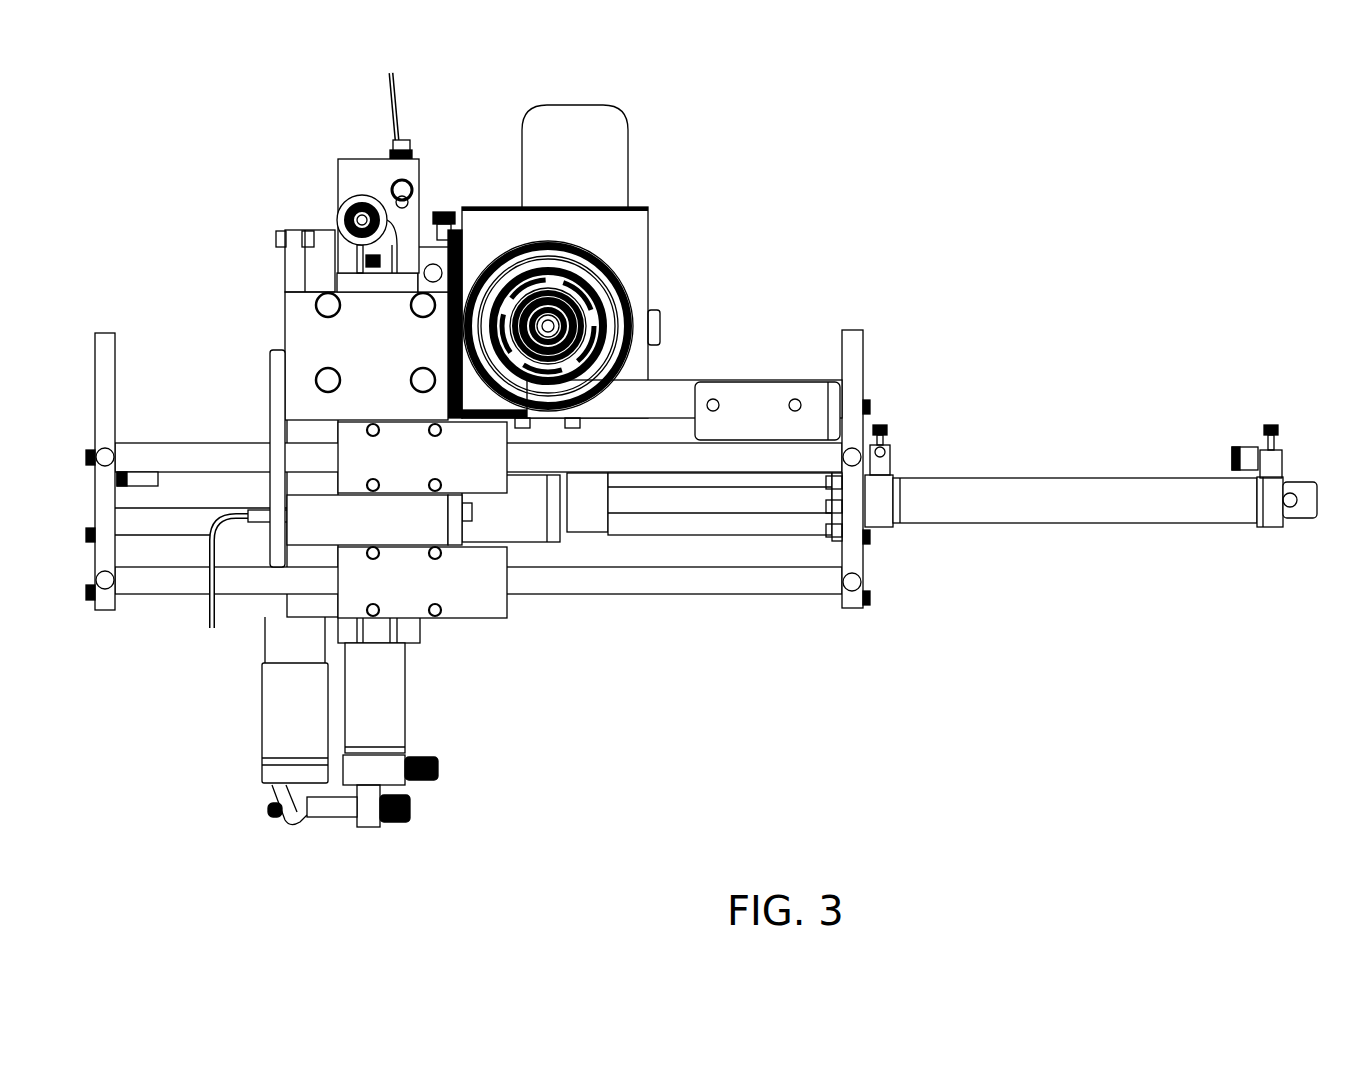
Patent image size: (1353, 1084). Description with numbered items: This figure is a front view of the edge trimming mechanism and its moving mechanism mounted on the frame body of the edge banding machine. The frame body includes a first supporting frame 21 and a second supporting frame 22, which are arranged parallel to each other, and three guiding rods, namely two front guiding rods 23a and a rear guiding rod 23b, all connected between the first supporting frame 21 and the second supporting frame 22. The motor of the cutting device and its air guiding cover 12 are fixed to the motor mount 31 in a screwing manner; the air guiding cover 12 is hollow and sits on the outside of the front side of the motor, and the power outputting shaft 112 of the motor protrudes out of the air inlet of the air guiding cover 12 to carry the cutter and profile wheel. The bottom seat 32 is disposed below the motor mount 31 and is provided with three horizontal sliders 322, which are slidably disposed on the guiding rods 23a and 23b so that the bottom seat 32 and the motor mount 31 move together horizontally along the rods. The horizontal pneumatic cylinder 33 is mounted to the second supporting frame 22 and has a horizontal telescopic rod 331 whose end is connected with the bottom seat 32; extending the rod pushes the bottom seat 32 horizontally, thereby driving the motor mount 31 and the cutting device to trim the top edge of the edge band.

The air guiding cover 12 is at (630, 222).
The power outputting shaft 112 is at (600, 322).
The first supporting frame 21 is at (105, 345).
The second supporting frame 22 is at (858, 345).
The front guiding rods 23a is at (197, 457).
The rear guiding rod 23b is at (135, 522).
The motor mount 31 is at (362, 172).
The bottom seat 32 is at (323, 517).
The horizontal sliders 322 is at (485, 478).
The horizontal pneumatic cylinder 33 is at (1128, 508).
The horizontal telescopic rod 331 is at (733, 503).